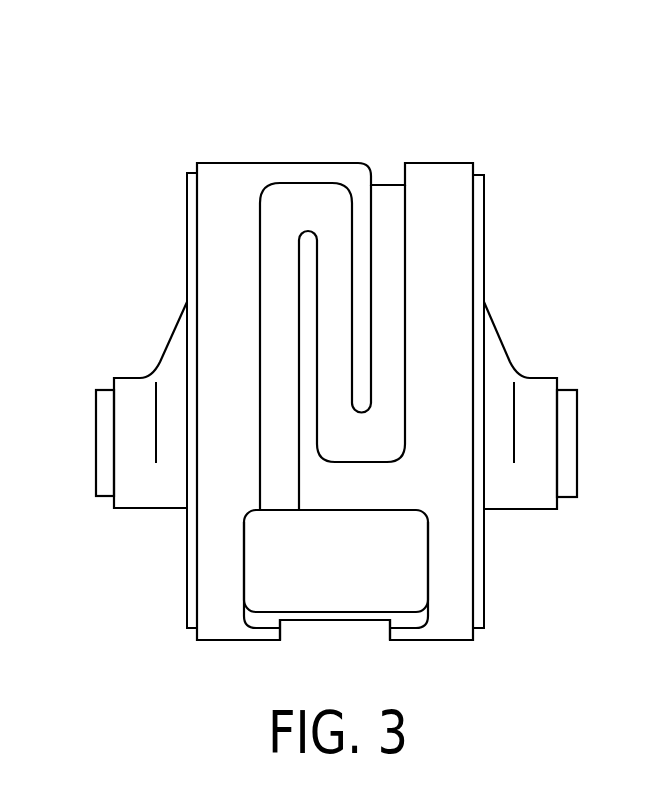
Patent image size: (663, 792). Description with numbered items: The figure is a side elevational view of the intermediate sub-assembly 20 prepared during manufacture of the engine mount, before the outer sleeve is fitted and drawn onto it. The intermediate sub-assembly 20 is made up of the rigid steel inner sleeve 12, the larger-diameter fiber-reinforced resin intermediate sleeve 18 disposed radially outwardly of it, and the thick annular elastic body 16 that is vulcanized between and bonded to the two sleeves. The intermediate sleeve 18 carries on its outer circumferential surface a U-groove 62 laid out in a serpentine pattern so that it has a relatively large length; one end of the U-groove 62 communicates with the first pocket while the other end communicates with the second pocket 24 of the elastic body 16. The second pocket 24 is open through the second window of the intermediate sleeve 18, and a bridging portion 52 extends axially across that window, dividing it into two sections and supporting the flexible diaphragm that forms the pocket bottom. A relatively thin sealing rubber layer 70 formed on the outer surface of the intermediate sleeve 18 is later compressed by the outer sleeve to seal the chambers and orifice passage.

The intermediate sub-assembly 20 is at (236, 98).
The sealing rubber layer 70 is at (228, 177).
The intermediate sleeve 18 is at (478, 223).
The U-groove 62 is at (397, 270).
The elastic body 16 is at (497, 365).
The inner sleeve 12 is at (103, 460).
The second pocket 24 is at (420, 553).
The bridging portion 52 is at (325, 619).